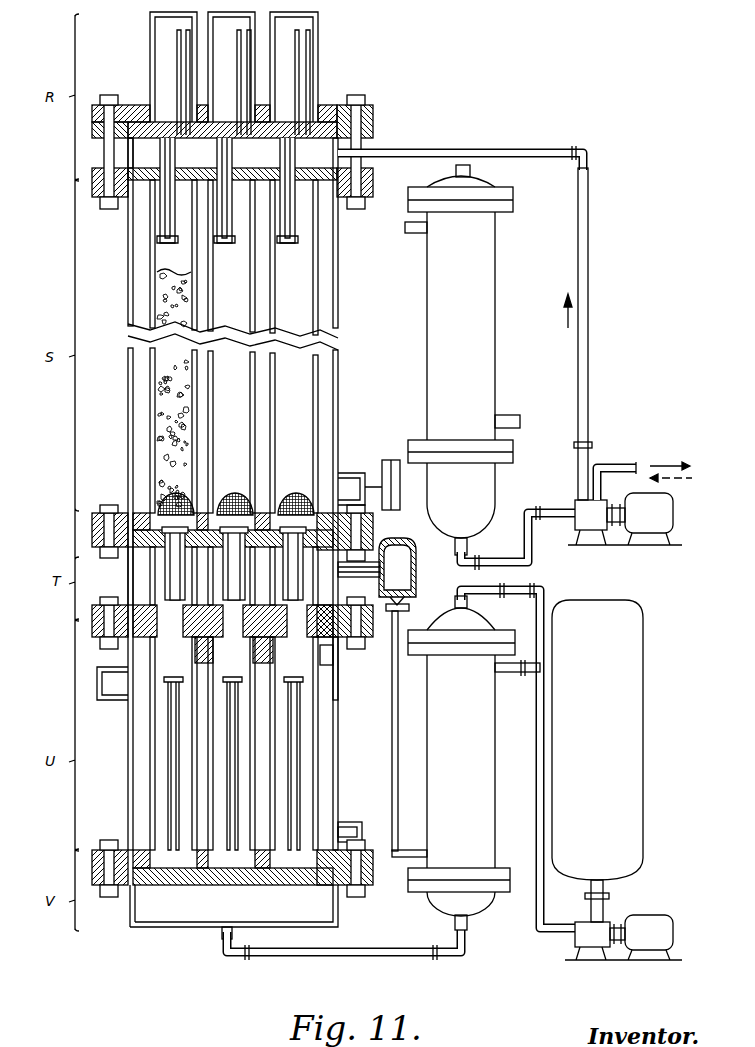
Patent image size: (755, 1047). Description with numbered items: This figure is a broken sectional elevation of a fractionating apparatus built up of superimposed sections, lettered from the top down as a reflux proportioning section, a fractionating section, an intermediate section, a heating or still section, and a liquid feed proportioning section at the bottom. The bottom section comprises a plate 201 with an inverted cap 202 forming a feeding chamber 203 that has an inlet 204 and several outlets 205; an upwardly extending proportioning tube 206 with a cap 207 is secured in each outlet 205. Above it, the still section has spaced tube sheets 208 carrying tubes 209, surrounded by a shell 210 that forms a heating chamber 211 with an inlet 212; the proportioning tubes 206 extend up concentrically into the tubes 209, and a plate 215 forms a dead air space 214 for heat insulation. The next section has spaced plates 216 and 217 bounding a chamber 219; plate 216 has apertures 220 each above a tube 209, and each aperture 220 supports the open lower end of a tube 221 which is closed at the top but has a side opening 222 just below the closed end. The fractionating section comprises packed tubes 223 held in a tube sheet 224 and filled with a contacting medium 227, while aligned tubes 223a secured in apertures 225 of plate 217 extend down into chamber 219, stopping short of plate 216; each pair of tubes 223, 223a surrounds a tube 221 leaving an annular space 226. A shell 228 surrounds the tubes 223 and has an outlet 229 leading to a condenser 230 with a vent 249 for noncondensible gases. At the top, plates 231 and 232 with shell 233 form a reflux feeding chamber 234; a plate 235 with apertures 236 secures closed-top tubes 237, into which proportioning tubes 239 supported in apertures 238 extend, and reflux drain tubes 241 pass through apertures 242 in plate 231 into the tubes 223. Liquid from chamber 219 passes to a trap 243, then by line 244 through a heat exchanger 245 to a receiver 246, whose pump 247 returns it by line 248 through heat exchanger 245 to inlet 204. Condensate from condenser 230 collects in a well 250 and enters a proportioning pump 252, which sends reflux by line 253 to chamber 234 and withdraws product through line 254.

The plate 201 is at (366, 888).
The inverted cap 202 is at (340, 925).
The feeding chamber 203 is at (172, 905).
The inlet 204 is at (224, 940).
The outlets 205 is at (130, 918).
The proportioning tube 206 is at (170, 742).
The cap 207 is at (296, 682).
The tube sheets 208 is at (92, 636).
The tubes 209 is at (320, 728).
The shell 210 is at (338, 792).
The heating chamber 211 is at (326, 754).
The inlet 212 is at (110, 690).
The dead air space 214 is at (333, 660).
The plate 215 is at (338, 684).
The plate 216 is at (92, 616).
The plate 217 is at (92, 540).
The chamber 219 is at (352, 577).
The apertures 220 is at (238, 612).
The tube 221 is at (178, 612).
The opening 222 is at (150, 562).
The packed tubes 223 is at (322, 275).
The tubes 223a is at (128, 580).
The tube sheet 224 is at (100, 513).
The apertures 225 is at (392, 540).
The annular space 226 is at (288, 492).
The contacting medium 227 is at (156, 378).
The shell 228 is at (340, 402).
The outlet 229 is at (355, 478).
The condenser 230 is at (427, 405).
The plate 231 is at (375, 176).
The plate 232 is at (373, 134).
The shell 233 is at (110, 158).
The reflux feeding chamber 234 is at (128, 152).
The plate 235 is at (373, 110).
The apertures 236 is at (322, 104).
The tube 237 is at (318, 38).
The apertures 238 is at (232, 141).
The proportioning tube 239 is at (177, 48).
The reflux drain tube 241 is at (282, 203).
The apertures 242 is at (176, 186).
The trap 243 is at (410, 572).
The line 244 is at (398, 778).
The heat exchanger 245 is at (487, 760).
The receiver 246 is at (638, 744).
The pump 247 is at (600, 928).
The line 248 is at (292, 960).
The vent 249 is at (470, 150).
The well 250 is at (478, 494).
The proportioning pump 252 is at (582, 520).
The line 253 is at (590, 414).
The line 254 is at (624, 462).